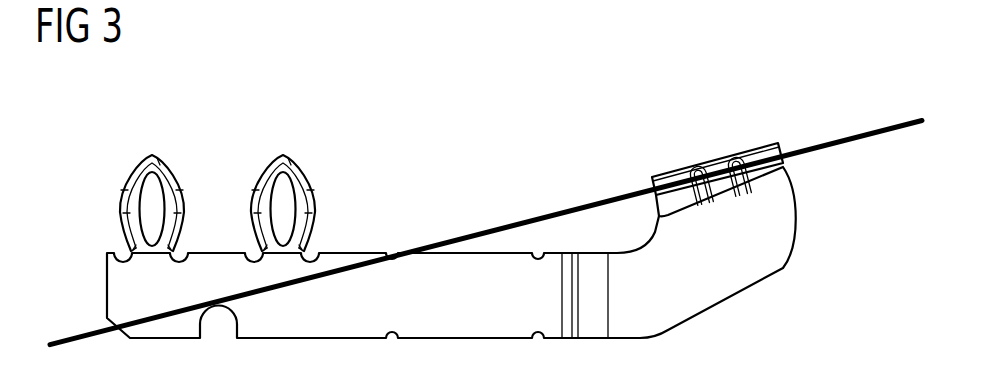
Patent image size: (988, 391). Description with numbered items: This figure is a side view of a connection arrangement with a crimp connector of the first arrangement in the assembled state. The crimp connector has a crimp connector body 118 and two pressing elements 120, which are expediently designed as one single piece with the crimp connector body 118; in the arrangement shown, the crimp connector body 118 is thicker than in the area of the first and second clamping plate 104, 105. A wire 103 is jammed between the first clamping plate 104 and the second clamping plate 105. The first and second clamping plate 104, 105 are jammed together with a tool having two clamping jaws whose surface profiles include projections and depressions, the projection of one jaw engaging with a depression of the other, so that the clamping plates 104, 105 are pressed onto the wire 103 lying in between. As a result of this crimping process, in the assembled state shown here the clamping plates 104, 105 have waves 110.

The wire 103 is at (843, 135).
The first clamping plate 104 is at (797, 179).
The second clamping plate 105 is at (773, 172).
The waves 110 is at (740, 158).
The crimp connector body 118 is at (214, 268).
The pressing elements 120 is at (280, 152).